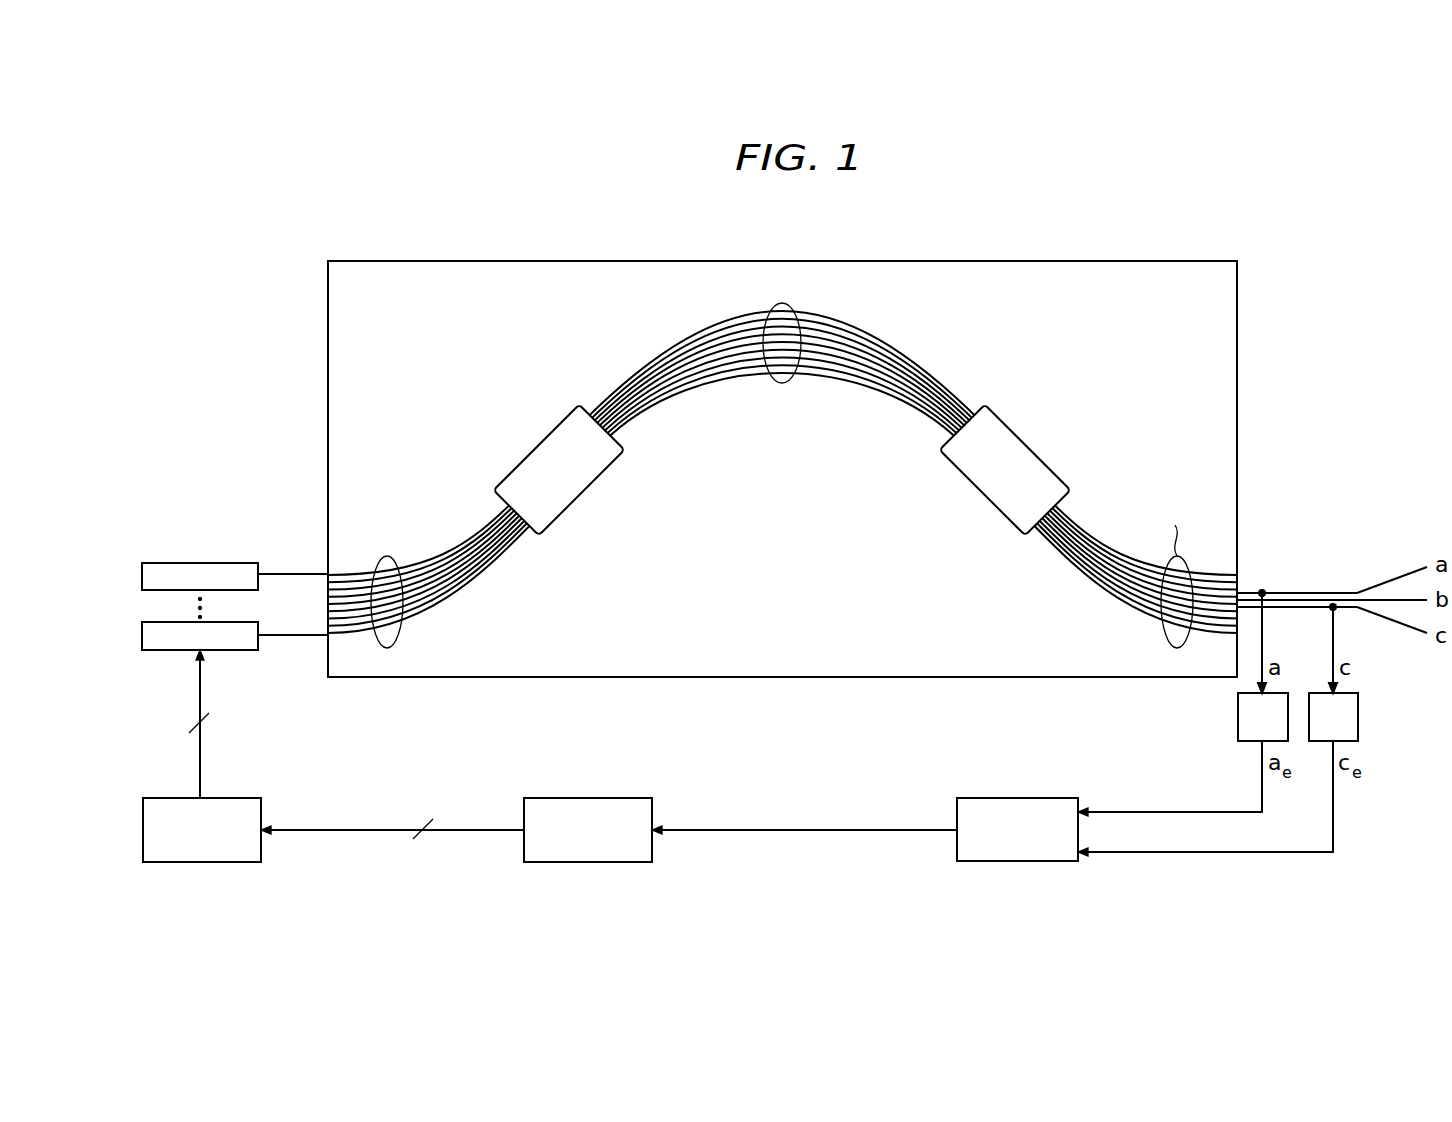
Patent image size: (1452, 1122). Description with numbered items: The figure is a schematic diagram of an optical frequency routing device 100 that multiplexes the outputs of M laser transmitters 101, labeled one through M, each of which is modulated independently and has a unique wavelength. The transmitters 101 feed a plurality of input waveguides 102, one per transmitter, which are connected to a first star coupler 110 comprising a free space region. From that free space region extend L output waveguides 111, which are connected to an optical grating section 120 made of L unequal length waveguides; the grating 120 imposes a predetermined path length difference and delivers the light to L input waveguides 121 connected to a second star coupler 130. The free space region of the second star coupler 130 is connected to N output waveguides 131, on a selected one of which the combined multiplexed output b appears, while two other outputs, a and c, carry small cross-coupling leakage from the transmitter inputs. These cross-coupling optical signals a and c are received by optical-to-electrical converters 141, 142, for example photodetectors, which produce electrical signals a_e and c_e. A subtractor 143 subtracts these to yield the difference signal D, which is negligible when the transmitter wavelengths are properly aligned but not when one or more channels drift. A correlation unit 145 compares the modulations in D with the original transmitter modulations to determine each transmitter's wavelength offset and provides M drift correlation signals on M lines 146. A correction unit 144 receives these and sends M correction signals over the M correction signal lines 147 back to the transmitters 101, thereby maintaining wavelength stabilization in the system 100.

The optical frequency routing device 100 is at (810, 211).
The laser transmitters 101 is at (200, 562).
The input waveguides 102 is at (387, 556).
The first star coupler 110 is at (582, 492).
The output waveguides 111 is at (627, 377).
The optical grating section 120 is at (782, 383).
The input waveguides 121 is at (950, 386).
The second star coupler 130 is at (978, 497).
The output waveguides 131 is at (1063, 566).
The optical-to-electrical converter 141 is at (1238, 717).
The optical-to-electrical converter 142 is at (1358, 717).
The subtractor 143 is at (1015, 862).
The correction unit 144 is at (200, 862).
The correlation unit 145 is at (590, 797).
The lines 146 is at (373, 829).
The correction signal lines 147 is at (200, 766).